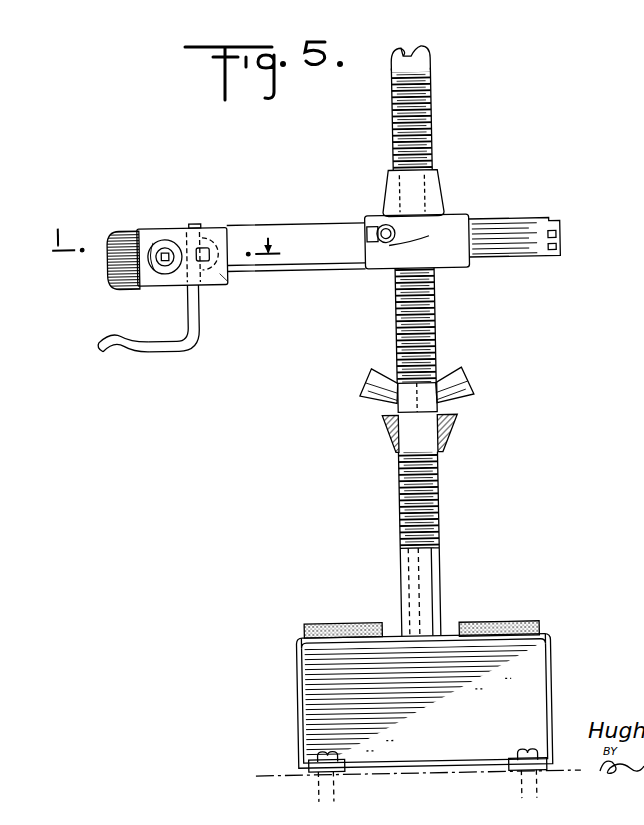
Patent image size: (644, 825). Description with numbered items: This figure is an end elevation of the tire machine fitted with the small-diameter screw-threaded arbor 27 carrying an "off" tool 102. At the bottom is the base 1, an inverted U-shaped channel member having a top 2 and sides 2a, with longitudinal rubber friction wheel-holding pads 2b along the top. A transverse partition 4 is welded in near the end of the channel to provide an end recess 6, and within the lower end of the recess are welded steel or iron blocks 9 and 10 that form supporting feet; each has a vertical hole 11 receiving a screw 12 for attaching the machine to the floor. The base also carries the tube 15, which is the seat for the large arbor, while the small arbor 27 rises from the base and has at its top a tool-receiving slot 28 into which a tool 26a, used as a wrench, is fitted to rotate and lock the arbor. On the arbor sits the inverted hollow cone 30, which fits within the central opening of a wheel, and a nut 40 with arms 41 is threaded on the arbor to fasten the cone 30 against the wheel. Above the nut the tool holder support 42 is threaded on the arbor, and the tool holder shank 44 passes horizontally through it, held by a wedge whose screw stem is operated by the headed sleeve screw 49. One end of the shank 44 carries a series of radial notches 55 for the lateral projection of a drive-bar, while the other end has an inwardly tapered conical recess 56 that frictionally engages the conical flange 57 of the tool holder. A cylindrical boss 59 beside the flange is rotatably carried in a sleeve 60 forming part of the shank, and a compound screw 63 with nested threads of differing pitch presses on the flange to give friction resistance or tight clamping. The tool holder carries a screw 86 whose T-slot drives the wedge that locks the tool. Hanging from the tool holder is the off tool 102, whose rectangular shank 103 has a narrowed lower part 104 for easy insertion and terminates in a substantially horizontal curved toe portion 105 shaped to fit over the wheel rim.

The base 1 is at (277, 638).
The top 2 is at (393, 636).
The sides 2a is at (547, 694).
The longitudinal rubber friction wheel-holding pads 2b is at (331, 624).
The transverse partition 4 is at (412, 745).
The end recess 6 is at (433, 716).
The block 9 is at (505, 773).
The block 10 is at (330, 770).
The vertical hole 11 is at (300, 770).
The screw 12 is at (308, 753).
The tube 15 is at (164, 244).
The tool 26a is at (434, 50).
The small-diameter screw-threaded arbor 27 is at (397, 130).
The tool-receiving slot 28 is at (438, 100).
The inverted hollow cone 30 is at (452, 431).
The nut 40 is at (396, 410).
The arms 41 is at (464, 373).
The tool holder support 42 is at (442, 195).
The tool holder shank 44 is at (515, 234).
The headed sleeve screw 49 is at (375, 221).
The radial notches 55 is at (564, 252).
The conical recess 56 is at (227, 276).
The conical flange 57 is at (113, 239).
The cylindrical boss 59 is at (155, 243).
The sleeve 60 is at (147, 267).
The compound screw 63 is at (210, 241).
The screw 86 is at (168, 245).
The "off" tool 102 is at (210, 310).
The shank 103 is at (198, 221).
The lower part of the shank 104 is at (197, 338).
The finger or toe portion 105 is at (154, 353).